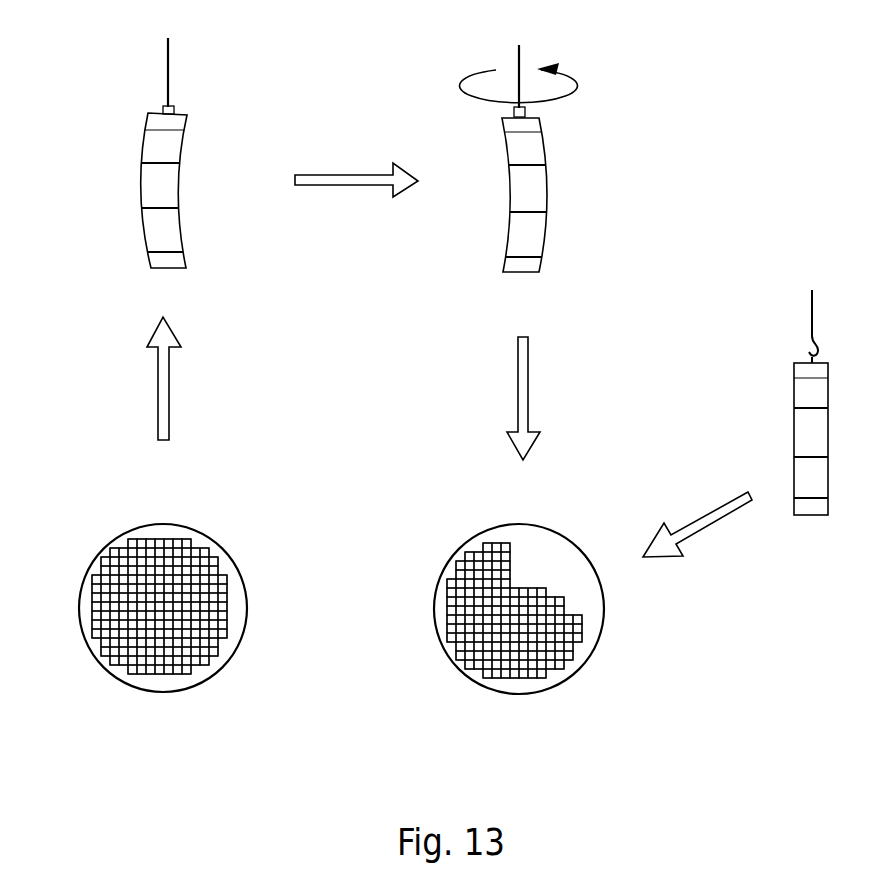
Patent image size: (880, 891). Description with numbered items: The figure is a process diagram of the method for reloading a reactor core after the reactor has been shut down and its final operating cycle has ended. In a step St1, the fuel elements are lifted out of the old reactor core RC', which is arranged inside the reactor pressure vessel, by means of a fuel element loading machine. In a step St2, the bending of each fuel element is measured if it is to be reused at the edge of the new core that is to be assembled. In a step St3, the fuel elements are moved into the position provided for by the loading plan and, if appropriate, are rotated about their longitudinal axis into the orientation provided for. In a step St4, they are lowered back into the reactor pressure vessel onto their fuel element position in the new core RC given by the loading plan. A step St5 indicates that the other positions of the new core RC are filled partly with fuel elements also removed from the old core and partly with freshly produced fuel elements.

The step St1 is at (163, 391).
The step St2 is at (132, 129).
The step St3 is at (338, 177).
The step St4 is at (523, 390).
The step St5 is at (705, 520).
The new core RC is at (489, 609).
The old reactor core RC' is at (128, 608).